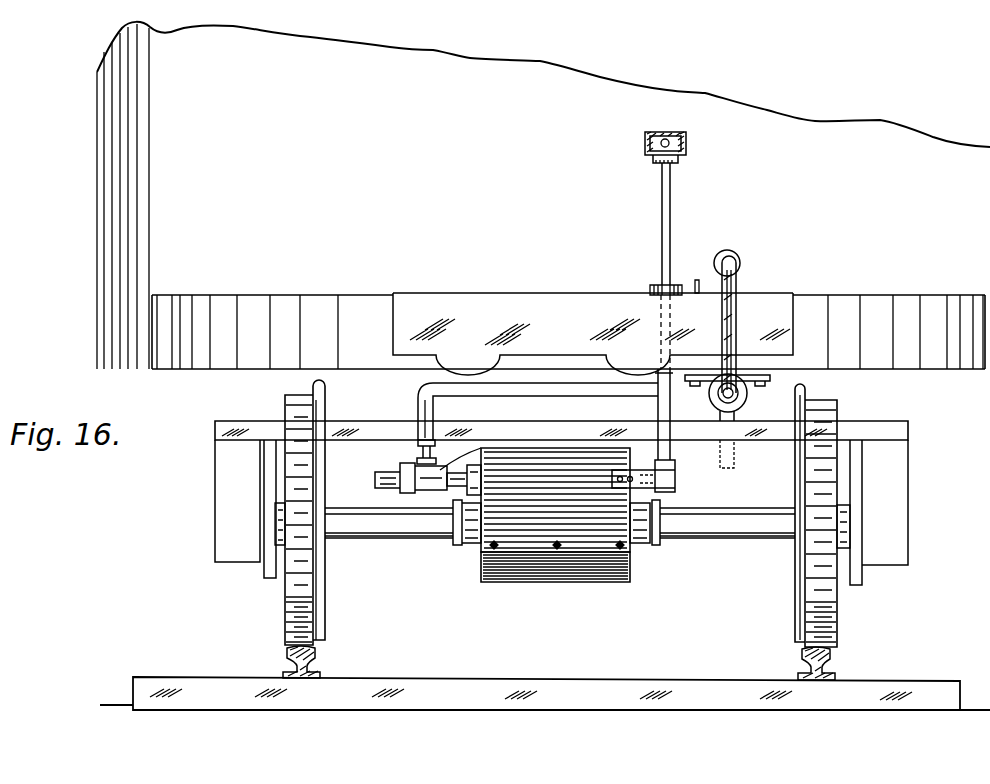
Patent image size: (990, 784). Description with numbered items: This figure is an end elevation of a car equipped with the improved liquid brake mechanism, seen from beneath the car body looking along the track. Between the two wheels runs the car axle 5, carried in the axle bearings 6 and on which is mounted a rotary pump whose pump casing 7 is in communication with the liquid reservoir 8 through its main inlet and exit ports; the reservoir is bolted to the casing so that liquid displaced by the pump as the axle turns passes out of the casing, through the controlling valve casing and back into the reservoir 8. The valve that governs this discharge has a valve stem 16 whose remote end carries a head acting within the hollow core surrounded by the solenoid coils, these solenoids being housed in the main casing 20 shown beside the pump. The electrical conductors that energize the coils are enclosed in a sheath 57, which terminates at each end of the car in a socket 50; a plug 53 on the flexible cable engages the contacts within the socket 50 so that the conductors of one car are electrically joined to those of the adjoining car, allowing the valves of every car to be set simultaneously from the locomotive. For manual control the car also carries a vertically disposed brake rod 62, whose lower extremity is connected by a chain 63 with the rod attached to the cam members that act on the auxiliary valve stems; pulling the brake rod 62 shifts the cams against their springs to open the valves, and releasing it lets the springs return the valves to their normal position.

The car axle 5 is at (408, 538).
The axle bearing 6 is at (561, 538).
The pump casing 7 is at (573, 582).
The liquid reservoir 8 is at (555, 500).
The valve stem 16 is at (449, 488).
The main casing 20 is at (428, 466).
The socket 50 is at (742, 378).
The plug 53 is at (739, 265).
The sheath 57 is at (623, 386).
The brake rod 62 is at (661, 243).
The chain 63 is at (676, 479).